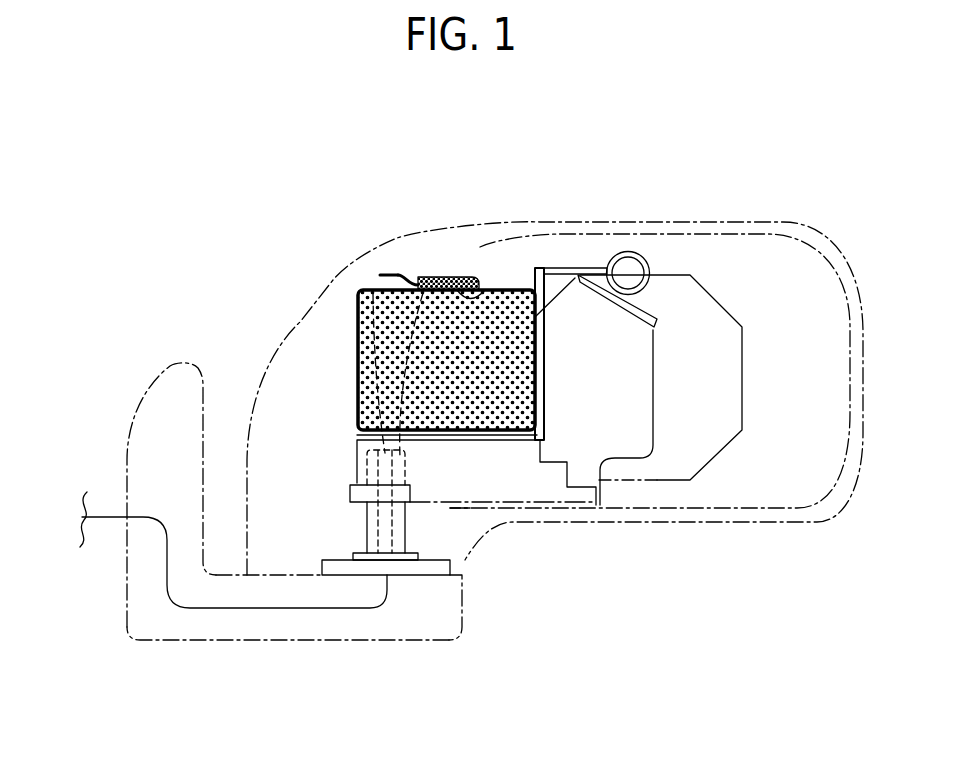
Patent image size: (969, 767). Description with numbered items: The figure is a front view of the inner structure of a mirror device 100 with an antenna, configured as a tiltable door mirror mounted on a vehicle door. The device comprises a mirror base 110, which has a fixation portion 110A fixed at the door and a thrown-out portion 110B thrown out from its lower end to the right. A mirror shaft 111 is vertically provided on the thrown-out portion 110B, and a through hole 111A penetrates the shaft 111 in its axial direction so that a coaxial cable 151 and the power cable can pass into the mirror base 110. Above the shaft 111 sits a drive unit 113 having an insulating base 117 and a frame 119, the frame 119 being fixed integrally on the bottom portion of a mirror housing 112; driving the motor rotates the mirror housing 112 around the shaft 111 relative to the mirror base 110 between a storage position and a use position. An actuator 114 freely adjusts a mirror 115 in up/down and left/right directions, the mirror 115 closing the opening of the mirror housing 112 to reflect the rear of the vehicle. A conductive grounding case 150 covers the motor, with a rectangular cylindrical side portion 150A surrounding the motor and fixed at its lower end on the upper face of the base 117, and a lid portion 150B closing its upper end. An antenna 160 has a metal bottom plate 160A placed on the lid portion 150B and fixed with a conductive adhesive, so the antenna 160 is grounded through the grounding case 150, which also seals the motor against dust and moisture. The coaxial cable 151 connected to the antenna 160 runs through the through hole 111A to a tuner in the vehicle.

The mirror device with antenna 100 is at (642, 180).
The mirror base 110 is at (160, 641).
The fixation portion 110A is at (130, 460).
The thrown-out portion 110B is at (365, 641).
The mirror shaft 111 is at (409, 528).
The through hole 111A is at (385, 560).
The mirror housing 112 is at (315, 300).
The drive unit 113 is at (345, 387).
The actuator 114 is at (718, 296).
The mirror 115 is at (776, 500).
The base 117 is at (528, 485).
The frame 119 is at (628, 422).
The grounding case 150 is at (357, 343).
The side portion 150A is at (387, 400).
The lid portion 150B is at (380, 273).
The coaxial cable 151 is at (382, 267).
The antenna 160 is at (440, 278).
The bottom plate 160A is at (495, 295).